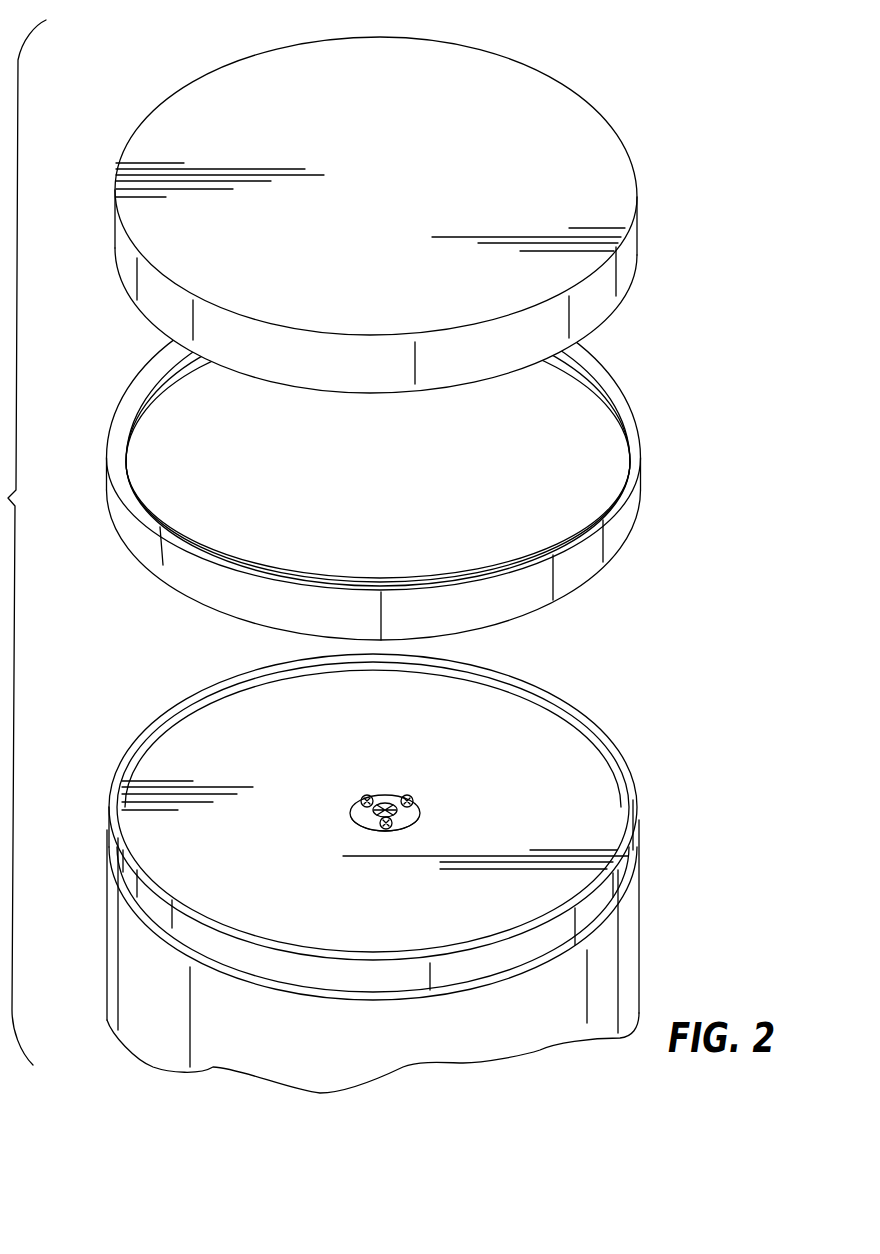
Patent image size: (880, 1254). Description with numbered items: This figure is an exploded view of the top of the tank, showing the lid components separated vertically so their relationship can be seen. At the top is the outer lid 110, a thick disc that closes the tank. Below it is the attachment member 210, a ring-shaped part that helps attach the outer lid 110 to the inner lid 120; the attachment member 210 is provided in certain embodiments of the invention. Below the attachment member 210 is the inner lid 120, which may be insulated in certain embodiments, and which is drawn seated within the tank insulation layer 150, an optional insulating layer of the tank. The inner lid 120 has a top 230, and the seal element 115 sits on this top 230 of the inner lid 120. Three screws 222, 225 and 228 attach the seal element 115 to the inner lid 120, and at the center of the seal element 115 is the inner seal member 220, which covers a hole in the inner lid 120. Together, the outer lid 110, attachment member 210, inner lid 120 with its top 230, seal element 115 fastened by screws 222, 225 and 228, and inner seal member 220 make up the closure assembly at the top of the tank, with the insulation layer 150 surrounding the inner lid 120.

The outer lid 110 is at (605, 173).
The attachment member 210 is at (613, 528).
The inner lid 120 is at (610, 877).
The tank insulation layer 150 is at (133, 960).
The top 230 is at (300, 741).
The seal element 115 is at (401, 795).
The inner seal member 220 is at (385, 803).
The screw 222 is at (359, 800).
The screw 228 is at (415, 798).
The screw 225 is at (381, 826).